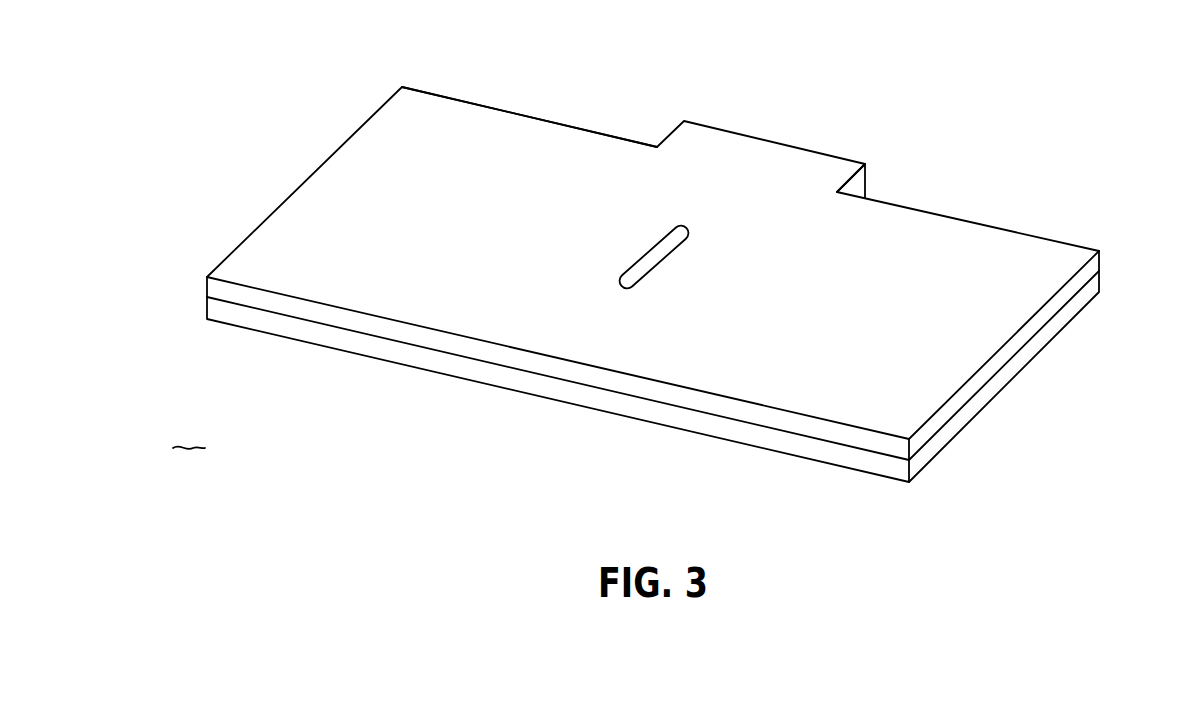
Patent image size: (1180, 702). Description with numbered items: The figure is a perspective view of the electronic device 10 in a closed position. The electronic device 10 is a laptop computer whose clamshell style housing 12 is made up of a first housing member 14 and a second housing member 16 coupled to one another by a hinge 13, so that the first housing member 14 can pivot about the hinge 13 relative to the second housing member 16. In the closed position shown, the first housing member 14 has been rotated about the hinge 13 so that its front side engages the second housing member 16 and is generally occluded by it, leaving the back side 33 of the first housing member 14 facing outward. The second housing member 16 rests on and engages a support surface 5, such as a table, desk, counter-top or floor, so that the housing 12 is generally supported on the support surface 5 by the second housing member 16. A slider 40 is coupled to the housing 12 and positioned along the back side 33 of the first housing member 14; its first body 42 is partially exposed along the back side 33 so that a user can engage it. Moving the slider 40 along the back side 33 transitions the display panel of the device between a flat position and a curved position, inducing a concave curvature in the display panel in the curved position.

The support surface 5 is at (184, 446).
The electronic device 10 is at (685, 250).
The housing 12 is at (435, 86).
The hinge 13 is at (862, 183).
The first housing member 14 is at (1101, 262).
The second housing member 16 is at (993, 387).
The back side 33 is at (397, 137).
The slider 40 is at (659, 241).
The first body 42 is at (667, 260).